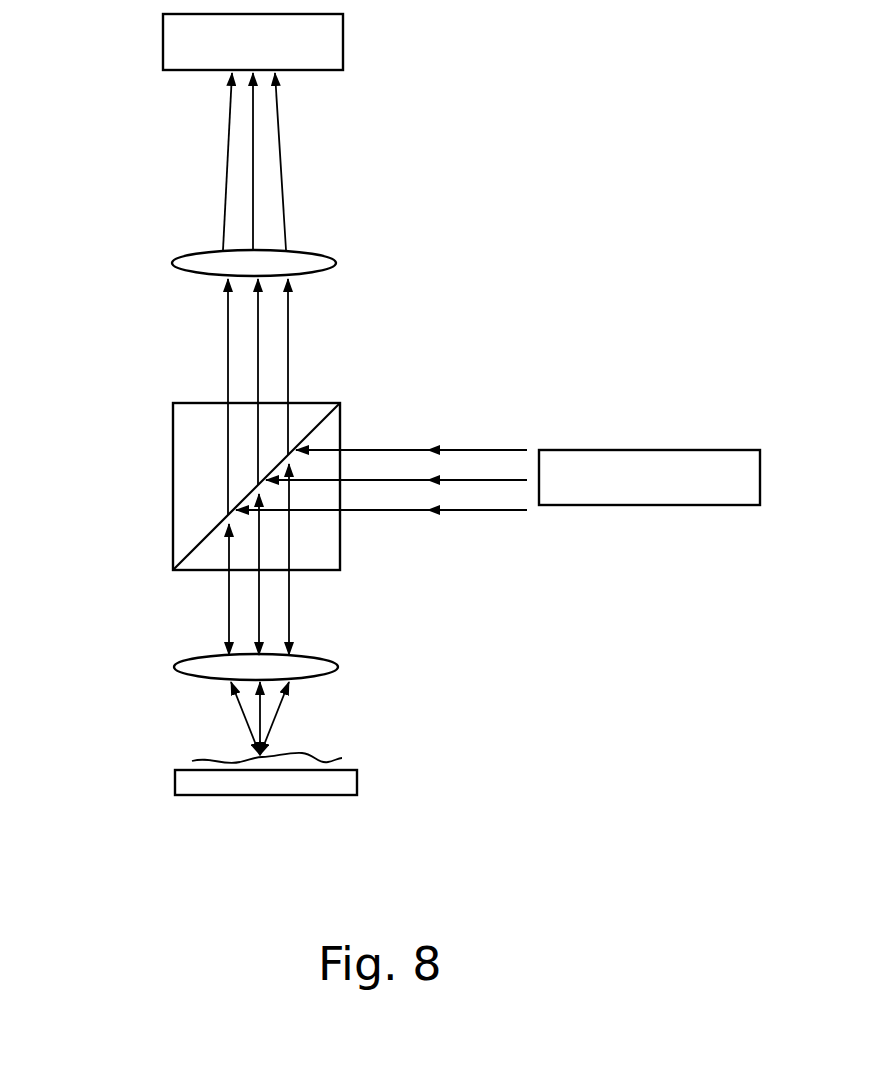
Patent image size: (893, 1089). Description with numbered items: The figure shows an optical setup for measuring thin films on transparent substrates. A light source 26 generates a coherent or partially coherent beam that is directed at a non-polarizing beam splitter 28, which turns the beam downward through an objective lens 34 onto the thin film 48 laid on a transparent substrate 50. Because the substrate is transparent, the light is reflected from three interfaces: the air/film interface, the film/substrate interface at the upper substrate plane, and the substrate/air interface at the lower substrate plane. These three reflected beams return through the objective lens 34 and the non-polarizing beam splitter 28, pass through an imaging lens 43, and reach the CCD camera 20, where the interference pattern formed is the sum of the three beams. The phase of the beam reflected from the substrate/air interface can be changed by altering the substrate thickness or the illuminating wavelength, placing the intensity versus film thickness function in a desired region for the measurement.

The CCD camera 20 is at (360, 44).
The imaging lens 43 is at (165, 263).
The non-polarizing beam splitter 28 is at (360, 576).
The light source 26 is at (763, 440).
The objective lens 34 is at (162, 666).
The thin film 48 is at (330, 752).
The transparent substrate 50 is at (330, 797).